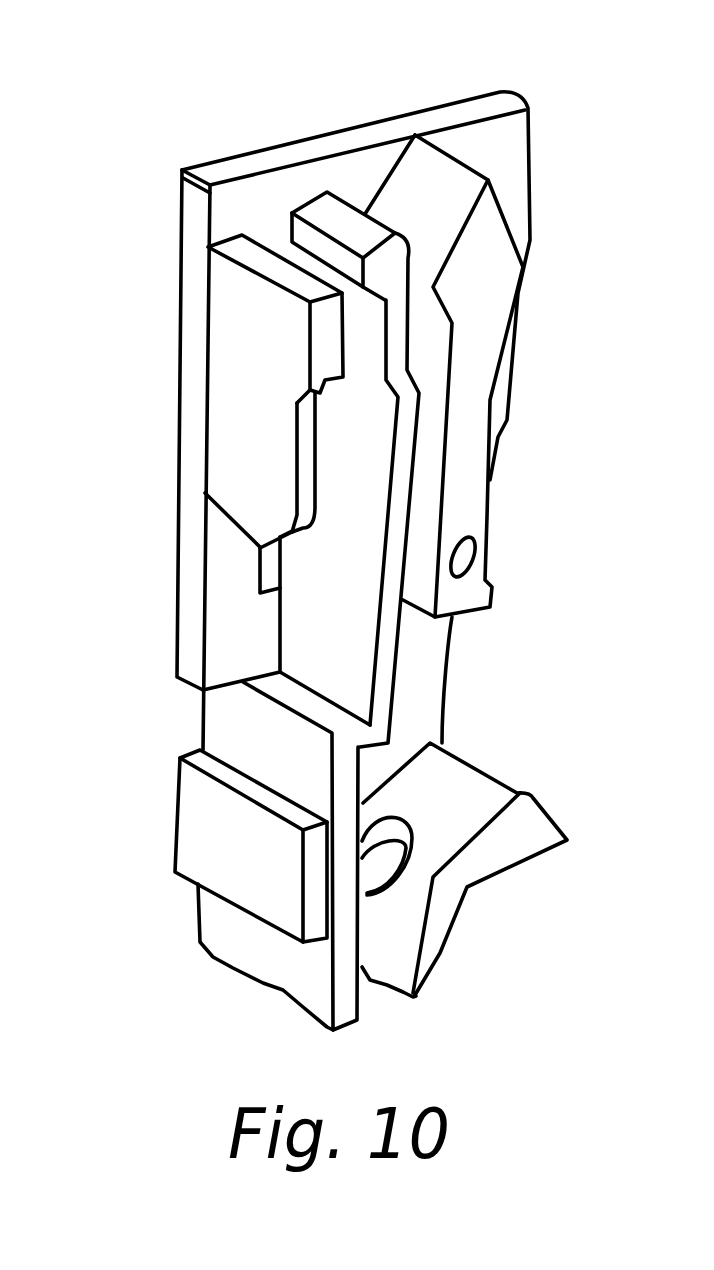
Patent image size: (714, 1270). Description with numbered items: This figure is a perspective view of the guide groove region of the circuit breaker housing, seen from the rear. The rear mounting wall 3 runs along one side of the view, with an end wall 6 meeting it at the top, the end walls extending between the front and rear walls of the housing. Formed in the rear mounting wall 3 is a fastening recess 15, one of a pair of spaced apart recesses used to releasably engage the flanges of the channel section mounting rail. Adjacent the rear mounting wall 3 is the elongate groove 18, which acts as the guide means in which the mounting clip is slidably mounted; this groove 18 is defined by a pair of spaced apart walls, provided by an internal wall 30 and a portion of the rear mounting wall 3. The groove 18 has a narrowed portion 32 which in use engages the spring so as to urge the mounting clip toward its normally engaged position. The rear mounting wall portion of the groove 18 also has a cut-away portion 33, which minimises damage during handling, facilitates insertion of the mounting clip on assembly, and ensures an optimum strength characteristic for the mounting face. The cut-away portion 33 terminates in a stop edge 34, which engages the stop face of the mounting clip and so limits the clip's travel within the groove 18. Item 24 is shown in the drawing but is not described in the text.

The rear mounting wall 3 is at (242, 338).
The end wall 6 is at (480, 107).
The fastening recess 15 is at (176, 713).
The elongate groove 18 is at (281, 213).
The carrier plate 24 is at (237, 202).
The internal wall 30 is at (410, 427).
The narrowed portion 32 is at (372, 342).
The cut-away portion 33 is at (258, 548).
The stop edge 34 is at (223, 582).